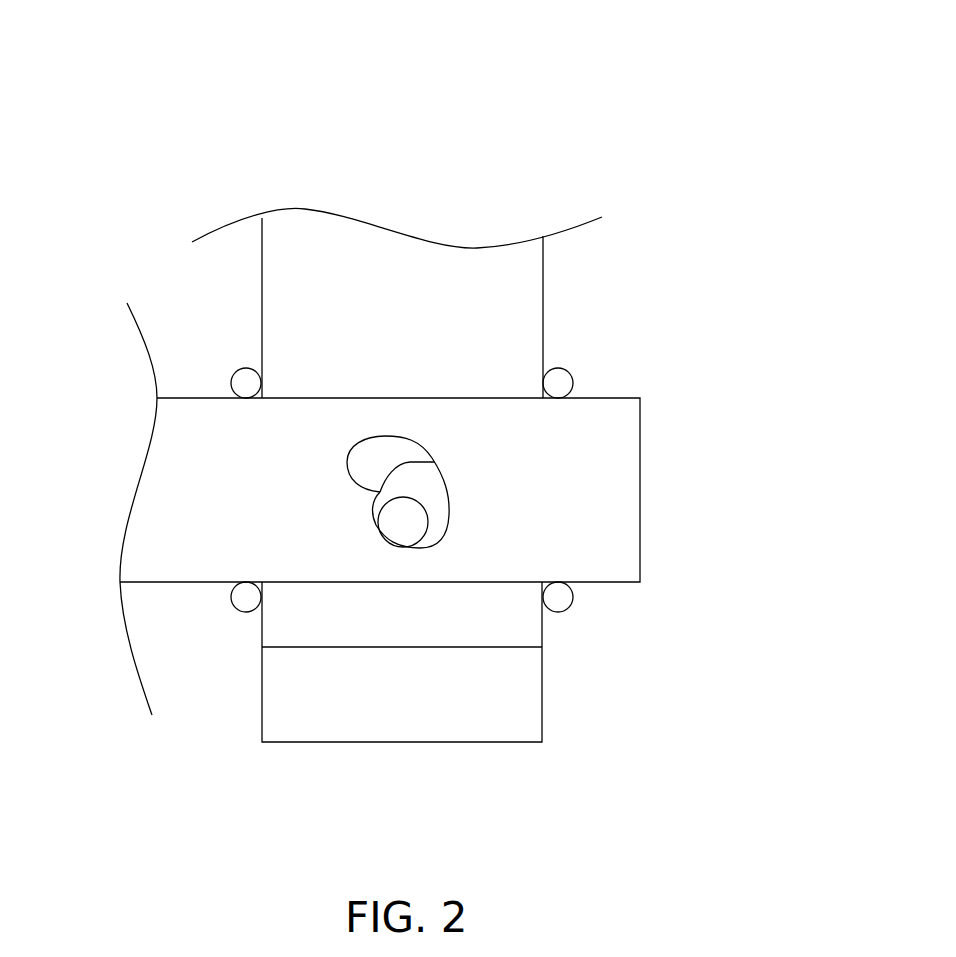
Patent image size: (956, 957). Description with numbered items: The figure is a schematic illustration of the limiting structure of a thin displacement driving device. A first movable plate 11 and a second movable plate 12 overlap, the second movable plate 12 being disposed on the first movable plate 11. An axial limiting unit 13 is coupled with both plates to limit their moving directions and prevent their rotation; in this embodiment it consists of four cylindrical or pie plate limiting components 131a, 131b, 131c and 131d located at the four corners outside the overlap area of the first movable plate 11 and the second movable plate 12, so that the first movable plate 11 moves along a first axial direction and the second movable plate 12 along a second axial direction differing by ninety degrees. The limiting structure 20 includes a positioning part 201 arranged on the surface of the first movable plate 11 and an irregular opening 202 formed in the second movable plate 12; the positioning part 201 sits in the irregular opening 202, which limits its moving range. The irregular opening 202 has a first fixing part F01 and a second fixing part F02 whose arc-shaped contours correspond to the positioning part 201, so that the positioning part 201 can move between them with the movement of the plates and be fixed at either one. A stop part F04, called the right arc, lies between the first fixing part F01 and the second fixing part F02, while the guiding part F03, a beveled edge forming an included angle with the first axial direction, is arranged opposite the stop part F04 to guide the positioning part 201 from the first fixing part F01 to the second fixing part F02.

The first movable plate 11 is at (527, 293).
The second movable plate 12 is at (625, 500).
The axial limiting unit 13 is at (605, 138).
The limiting component 131a is at (245, 374).
The limiting component 131b is at (567, 380).
The limiting component 131c is at (240, 602).
The limiting component 131d is at (566, 603).
The limiting structure 20 is at (383, 122).
The positioning part 201 is at (407, 530).
The irregular opening 202 is at (404, 446).
The first fixing part F01 is at (374, 528).
The second fixing part F02 is at (347, 460).
The guiding part F03 is at (443, 480).
The stop part F04 is at (430, 464).